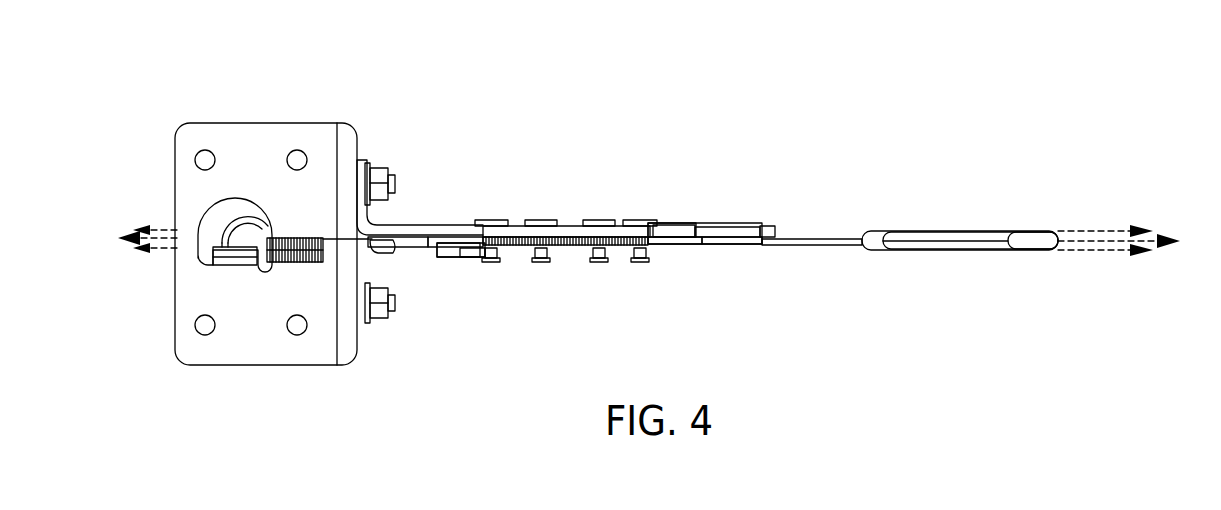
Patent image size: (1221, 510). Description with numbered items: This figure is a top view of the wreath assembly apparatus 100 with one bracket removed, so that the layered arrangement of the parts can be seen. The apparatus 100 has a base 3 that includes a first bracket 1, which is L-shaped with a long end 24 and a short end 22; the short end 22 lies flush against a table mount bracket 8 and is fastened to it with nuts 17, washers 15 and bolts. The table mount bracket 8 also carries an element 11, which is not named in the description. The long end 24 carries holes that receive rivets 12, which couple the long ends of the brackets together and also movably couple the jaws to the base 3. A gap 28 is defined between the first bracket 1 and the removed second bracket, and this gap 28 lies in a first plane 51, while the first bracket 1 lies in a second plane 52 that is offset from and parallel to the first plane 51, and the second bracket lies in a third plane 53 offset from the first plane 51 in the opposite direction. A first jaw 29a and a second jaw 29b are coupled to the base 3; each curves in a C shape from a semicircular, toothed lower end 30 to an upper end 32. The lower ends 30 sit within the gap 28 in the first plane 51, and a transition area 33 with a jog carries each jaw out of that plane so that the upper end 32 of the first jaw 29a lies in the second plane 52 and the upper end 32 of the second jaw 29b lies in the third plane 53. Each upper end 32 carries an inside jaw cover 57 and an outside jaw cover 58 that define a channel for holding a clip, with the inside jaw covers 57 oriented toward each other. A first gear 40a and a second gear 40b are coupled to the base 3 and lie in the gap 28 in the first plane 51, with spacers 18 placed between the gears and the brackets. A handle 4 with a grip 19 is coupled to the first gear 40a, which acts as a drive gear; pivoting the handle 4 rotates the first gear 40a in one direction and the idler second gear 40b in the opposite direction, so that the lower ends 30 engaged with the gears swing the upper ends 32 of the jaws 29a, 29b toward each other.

The apparatus 100 is at (905, 118).
The base 3 is at (331, 84).
The table mount bracket 8 is at (237, 128).
The hook 11 is at (290, 238).
The short end 22 is at (360, 198).
The nuts 17 is at (368, 172).
The washers 15 is at (380, 172).
The second jaw 29b is at (418, 258).
The outside jaw cover 58 is at (446, 258).
The inside jaw cover 57 is at (468, 262).
The upper end 32 is at (481, 280).
The lower end 30 is at (414, 220).
The long end 24 is at (440, 225).
The transition area 33 is at (460, 222).
The first bracket 1 is at (517, 230).
The rivets 12 is at (598, 220).
The gap 28 is at (571, 266).
The second gear 40b is at (523, 260).
The first gear 40a is at (597, 255).
The spacers 18 is at (655, 258).
The first jaw 29a is at (722, 228).
The handle 4 is at (813, 240).
The grip 19 is at (940, 236).
The second plane 52 is at (1075, 231).
The first plane 51 is at (1110, 241).
The third plane 53 is at (1078, 250).